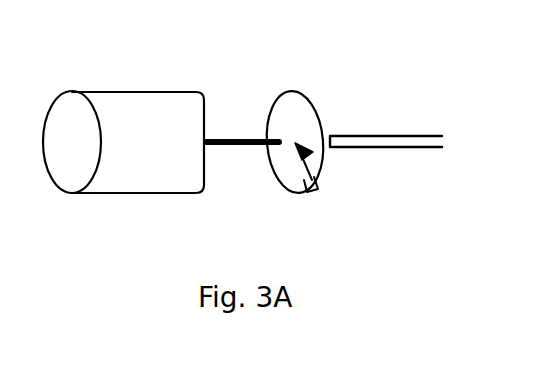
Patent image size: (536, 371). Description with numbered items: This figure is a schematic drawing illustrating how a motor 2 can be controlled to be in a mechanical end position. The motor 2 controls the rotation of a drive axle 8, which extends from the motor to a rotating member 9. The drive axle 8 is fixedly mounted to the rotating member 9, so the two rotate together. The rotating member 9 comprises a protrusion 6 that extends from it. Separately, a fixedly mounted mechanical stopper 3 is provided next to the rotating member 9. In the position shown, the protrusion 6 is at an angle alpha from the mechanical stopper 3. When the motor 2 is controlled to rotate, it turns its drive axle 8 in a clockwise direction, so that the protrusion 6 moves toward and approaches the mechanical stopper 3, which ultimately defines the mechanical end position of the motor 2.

The motor 2 is at (115, 118).
The drive axle 8 is at (230, 137).
The rotating member 9 is at (305, 93).
The protrusion 6 is at (313, 186).
The mechanical stopper 3 is at (388, 135).